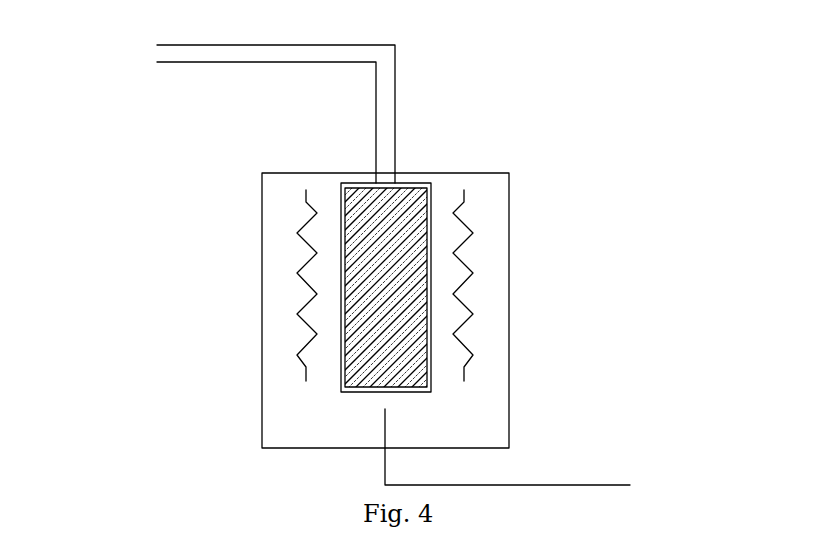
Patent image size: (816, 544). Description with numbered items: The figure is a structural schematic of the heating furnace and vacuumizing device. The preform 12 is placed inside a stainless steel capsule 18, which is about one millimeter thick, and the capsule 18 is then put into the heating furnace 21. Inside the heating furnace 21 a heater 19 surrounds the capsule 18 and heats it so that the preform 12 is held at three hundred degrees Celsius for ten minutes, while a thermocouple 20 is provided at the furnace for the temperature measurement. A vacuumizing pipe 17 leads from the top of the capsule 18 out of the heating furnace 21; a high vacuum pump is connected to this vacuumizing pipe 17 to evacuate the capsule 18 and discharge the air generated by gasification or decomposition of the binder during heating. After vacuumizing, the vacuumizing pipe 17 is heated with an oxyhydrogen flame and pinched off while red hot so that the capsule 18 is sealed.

The preform 12 is at (342, 287).
The vacuumizing pipe 17 is at (421, 102).
The capsule 18 is at (520, 262).
The heater 19 is at (570, 285).
The thermocouple 20 is at (552, 401).
The heating furnace 21 is at (271, 310).